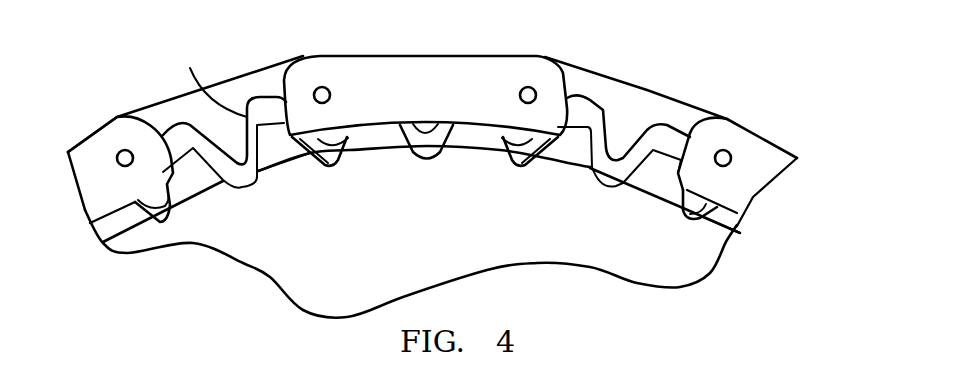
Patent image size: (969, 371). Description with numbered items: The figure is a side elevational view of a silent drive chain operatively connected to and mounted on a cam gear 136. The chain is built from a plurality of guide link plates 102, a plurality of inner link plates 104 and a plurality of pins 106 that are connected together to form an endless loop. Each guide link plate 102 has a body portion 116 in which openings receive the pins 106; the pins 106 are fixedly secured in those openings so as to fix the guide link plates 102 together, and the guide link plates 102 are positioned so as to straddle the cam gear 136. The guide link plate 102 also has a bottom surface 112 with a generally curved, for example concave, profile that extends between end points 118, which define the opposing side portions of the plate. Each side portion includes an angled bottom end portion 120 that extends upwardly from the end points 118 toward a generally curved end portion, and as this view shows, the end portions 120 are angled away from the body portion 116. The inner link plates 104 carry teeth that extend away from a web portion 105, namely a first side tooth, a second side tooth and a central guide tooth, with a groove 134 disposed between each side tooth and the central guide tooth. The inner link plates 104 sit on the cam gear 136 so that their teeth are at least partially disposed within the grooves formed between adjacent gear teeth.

The guide link plate 102 is at (442, 111).
The inner link plate 104 is at (623, 137).
The web portion 105 is at (247, 87).
The pin 106 is at (125, 150).
The bottom surface 112 is at (463, 127).
The body portion 116 is at (428, 80).
The end point 118 is at (328, 164).
The angled bottom end portion 120 is at (300, 150).
The groove 134 is at (187, 135).
The cam gear 136 is at (442, 233).